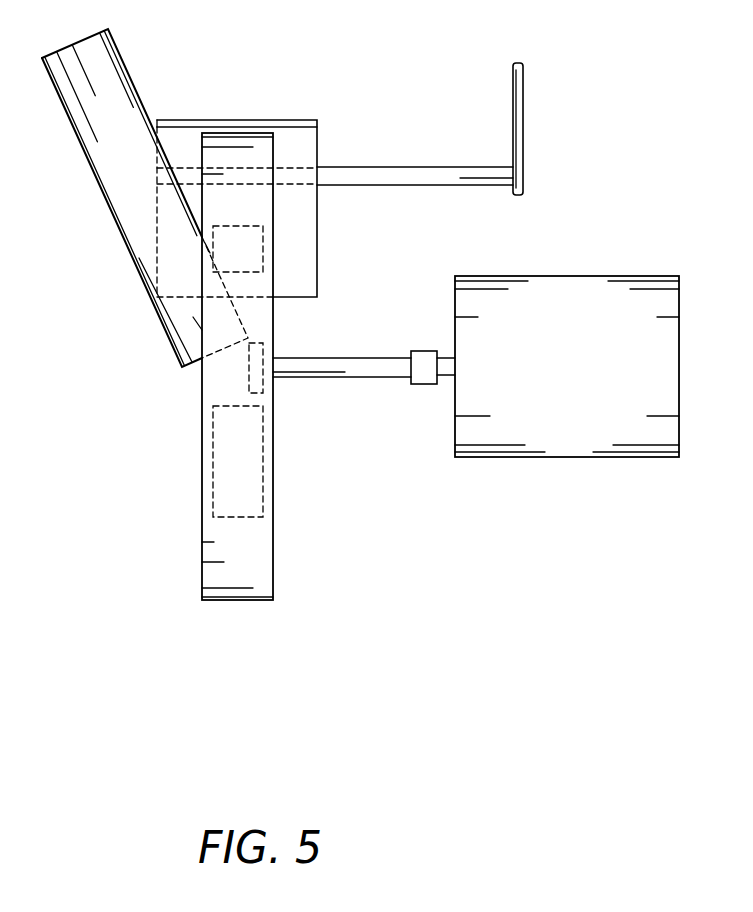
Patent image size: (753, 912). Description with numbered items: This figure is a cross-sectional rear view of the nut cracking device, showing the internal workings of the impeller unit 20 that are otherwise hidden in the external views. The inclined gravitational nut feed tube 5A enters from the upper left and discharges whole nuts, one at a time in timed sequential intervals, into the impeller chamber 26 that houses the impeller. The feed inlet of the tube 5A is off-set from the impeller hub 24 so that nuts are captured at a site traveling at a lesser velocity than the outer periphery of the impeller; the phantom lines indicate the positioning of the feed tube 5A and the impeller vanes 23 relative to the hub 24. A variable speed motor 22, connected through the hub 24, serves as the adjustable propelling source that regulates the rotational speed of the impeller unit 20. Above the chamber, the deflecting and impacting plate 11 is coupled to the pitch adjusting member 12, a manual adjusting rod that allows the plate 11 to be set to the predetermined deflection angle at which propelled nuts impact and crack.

The nut feed tube 5A is at (125, 210).
The deflecting and impacting plate 11 is at (298, 120).
The pitch adjusting member 12 is at (523, 138).
The impeller unit 20 is at (273, 552).
The variable speed motor 22 is at (575, 293).
The impeller vane 23 is at (255, 240).
The impeller hub 24 is at (260, 355).
The impeller chamber 26 is at (213, 543).